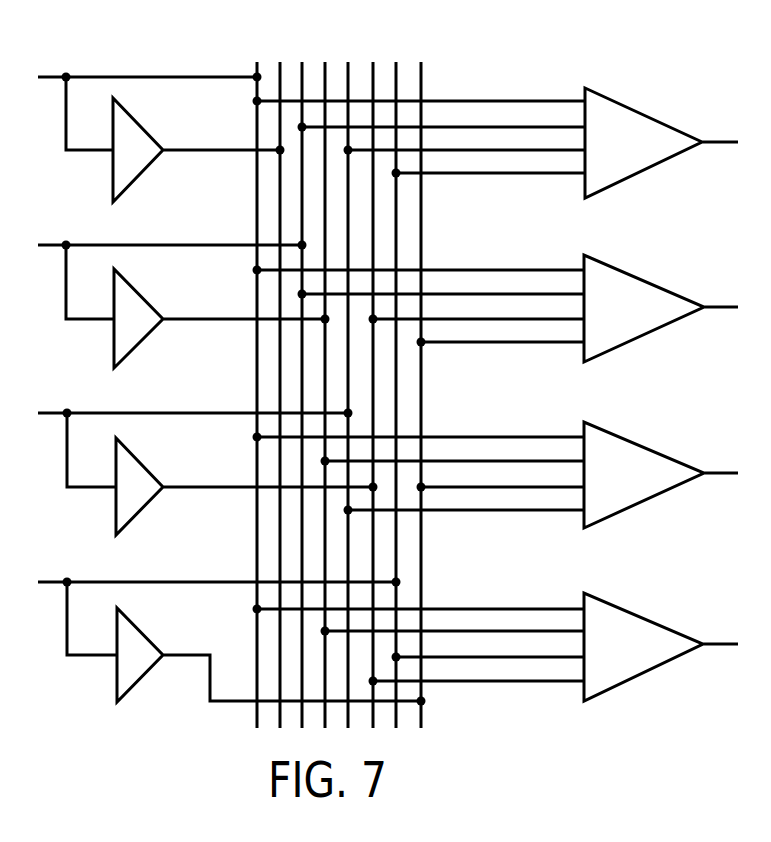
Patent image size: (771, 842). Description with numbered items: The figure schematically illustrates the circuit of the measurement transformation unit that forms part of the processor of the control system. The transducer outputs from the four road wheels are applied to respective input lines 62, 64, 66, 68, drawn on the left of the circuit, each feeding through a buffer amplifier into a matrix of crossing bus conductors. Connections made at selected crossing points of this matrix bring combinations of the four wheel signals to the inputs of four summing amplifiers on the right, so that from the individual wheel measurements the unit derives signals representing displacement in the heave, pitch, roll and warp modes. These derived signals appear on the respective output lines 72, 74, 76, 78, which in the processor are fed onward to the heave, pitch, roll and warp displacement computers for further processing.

The line 62 is at (46, 77).
The line 64 is at (46, 245).
The line 66 is at (47, 413).
The line 68 is at (47, 582).
The output line 72 is at (721, 140).
The output line 74 is at (720, 305).
The output line 76 is at (718, 472).
The output line 78 is at (721, 644).